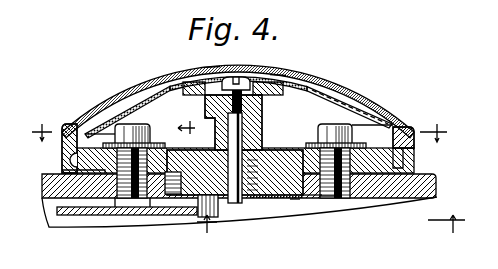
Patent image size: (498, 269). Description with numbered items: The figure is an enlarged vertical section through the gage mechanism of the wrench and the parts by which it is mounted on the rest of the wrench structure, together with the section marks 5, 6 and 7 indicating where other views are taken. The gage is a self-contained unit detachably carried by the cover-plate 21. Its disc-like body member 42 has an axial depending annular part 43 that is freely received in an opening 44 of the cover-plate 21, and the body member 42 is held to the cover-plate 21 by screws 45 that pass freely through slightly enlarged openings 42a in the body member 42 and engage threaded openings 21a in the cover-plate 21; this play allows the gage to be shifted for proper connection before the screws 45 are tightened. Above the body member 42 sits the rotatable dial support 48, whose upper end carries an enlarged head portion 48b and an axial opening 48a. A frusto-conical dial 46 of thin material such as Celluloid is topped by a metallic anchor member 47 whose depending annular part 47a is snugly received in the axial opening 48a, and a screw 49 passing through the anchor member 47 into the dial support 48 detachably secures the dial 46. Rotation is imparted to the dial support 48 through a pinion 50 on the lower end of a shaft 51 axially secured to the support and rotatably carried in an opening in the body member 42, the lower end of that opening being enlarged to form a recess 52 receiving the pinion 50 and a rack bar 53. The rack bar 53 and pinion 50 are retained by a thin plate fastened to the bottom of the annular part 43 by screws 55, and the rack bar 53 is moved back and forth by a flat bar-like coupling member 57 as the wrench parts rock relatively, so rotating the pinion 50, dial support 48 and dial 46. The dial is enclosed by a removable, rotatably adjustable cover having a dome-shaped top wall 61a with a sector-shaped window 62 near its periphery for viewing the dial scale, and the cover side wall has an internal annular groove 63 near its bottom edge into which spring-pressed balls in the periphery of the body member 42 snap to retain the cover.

The section line 5 is at (455, 223).
The section line 6 is at (197, 180).
The section line 7 is at (241, 134).
The cover-plate 21 is at (440, 188).
The threaded openings 21a is at (118, 200).
The body member 42 is at (392, 198).
The enlarged openings 42a is at (75, 128).
The annular part 43 is at (292, 202).
The opening 44 is at (310, 199).
The screws 45 is at (112, 124).
The dial 46 is at (380, 128).
The anchor member 47 is at (255, 69).
The annular part 47a is at (278, 80).
The dial support 48 is at (262, 126).
The axial opening 48a is at (168, 85).
The head portion 48b is at (262, 108).
The screw 49 is at (214, 67).
The pinion 50 is at (264, 200).
The shaft 51 is at (250, 148).
The recess 52 is at (250, 190).
The rack bar 53 is at (192, 215).
The screws 55 is at (170, 200).
The coupling member 57 is at (75, 214).
The dome-shaped top wall 61a is at (117, 97).
The window 62 is at (328, 80).
The annular groove 63 is at (63, 162).